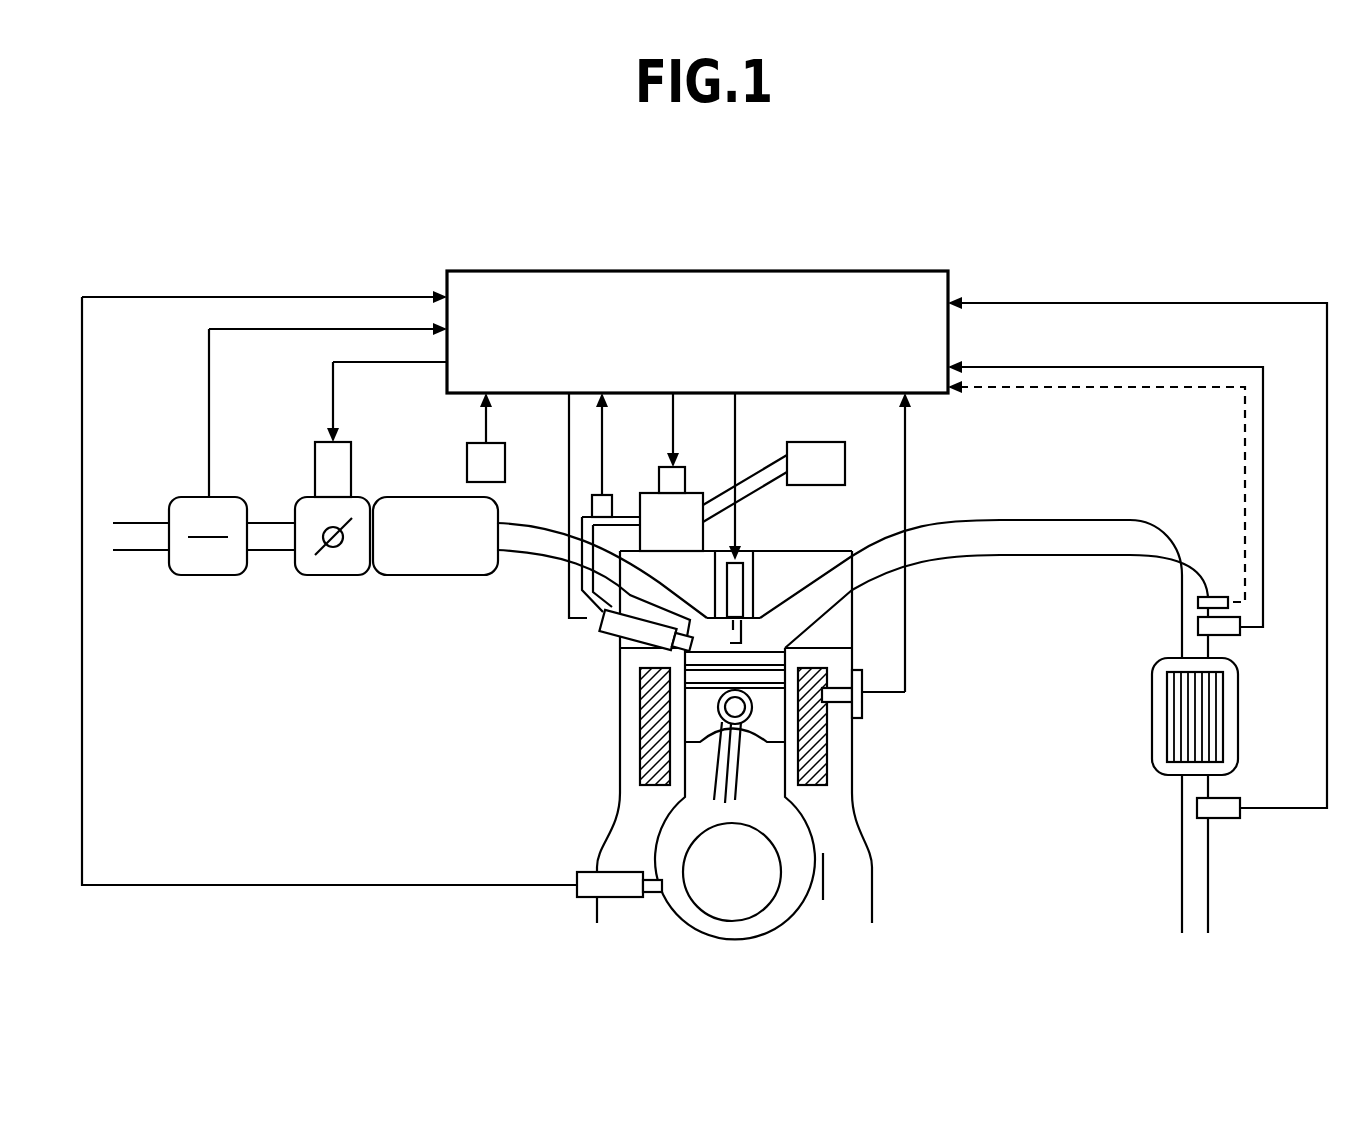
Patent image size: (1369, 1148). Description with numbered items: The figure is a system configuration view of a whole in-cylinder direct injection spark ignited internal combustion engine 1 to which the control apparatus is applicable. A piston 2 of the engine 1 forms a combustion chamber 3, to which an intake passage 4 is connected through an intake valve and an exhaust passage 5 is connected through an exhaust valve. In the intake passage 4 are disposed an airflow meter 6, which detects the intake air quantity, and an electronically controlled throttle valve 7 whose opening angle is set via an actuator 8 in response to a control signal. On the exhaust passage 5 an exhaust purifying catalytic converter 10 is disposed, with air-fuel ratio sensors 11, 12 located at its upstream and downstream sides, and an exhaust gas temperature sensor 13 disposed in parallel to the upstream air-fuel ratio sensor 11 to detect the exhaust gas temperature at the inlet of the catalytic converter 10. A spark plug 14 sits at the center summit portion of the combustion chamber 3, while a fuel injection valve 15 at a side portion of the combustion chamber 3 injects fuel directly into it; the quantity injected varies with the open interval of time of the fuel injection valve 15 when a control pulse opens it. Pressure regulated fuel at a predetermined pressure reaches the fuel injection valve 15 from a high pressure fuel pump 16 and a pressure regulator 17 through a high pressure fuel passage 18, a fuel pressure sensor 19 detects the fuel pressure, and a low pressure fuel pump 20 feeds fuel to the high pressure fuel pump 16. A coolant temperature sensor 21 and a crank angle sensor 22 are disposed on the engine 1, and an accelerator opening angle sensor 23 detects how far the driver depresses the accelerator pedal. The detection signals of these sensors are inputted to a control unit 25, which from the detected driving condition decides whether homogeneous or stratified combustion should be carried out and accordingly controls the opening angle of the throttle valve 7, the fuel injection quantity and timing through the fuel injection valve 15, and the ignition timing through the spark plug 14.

The internal combustion engine 1 is at (600, 776).
The piston 2 is at (772, 716).
The combustion chamber 3 is at (765, 636).
The intake passage 4 is at (138, 552).
The exhaust passage 5 is at (1040, 520).
The airflow meter 6 is at (218, 578).
The electronically controlled throttle valve 7 is at (327, 552).
The actuator 8 is at (315, 468).
The exhaust purifying catalytic converter 10 is at (1152, 697).
The air-fuel ratio sensor 11 is at (1230, 637).
The air-fuel ratio sensor 12 is at (1228, 820).
The exhaust gas temperature sensor 13 is at (1220, 597).
The spark plug 14 is at (755, 578).
The fuel injection valve 15 is at (610, 634).
The high pressure fuel pump 16 is at (694, 492).
The pressure regulator 17 is at (662, 467).
The high pressure fuel passage 18 is at (585, 605).
The fuel pressure sensor 19 is at (607, 494).
The low pressure fuel pump 20 is at (822, 442).
The coolant temperature sensor 21 is at (862, 708).
The crank angle sensor 22 is at (588, 872).
The accelerator opening angle sensor 23 is at (467, 465).
The control unit 25 is at (883, 271).